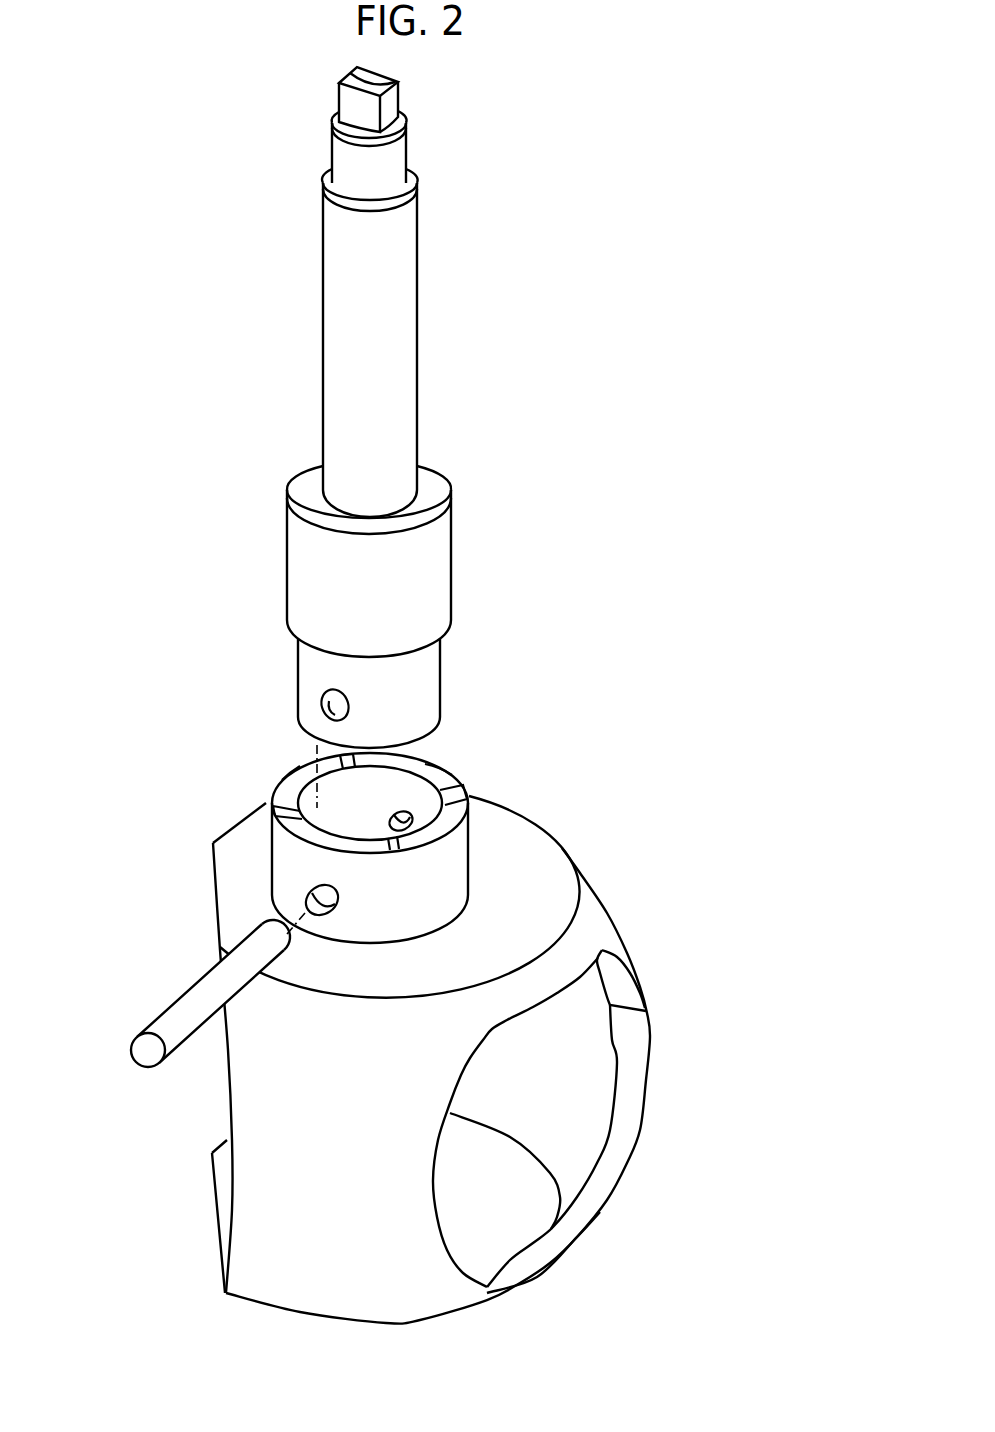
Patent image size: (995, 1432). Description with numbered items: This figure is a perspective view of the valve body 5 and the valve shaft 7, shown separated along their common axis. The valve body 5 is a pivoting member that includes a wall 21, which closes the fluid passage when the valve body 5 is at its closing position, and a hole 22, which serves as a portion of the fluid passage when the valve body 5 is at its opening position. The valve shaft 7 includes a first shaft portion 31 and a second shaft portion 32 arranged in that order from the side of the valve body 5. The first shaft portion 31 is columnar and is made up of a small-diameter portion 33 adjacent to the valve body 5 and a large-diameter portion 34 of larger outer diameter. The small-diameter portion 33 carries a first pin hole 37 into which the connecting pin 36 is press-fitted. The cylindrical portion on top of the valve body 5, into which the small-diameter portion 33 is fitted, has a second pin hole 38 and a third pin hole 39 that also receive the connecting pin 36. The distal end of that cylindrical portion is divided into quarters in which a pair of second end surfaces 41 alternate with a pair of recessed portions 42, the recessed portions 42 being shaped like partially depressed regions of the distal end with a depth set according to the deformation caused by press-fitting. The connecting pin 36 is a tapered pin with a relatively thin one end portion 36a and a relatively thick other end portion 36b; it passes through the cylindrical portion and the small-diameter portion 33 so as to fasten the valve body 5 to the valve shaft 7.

The valve shaft 7 is at (400, 407).
The second shaft portion 32 is at (418, 383).
The first shaft portion 31 is at (442, 607).
The large-diameter portion 34 is at (430, 562).
The small-diameter portion 33 is at (424, 693).
The first pin hole 37 is at (322, 713).
The second end surfaces 41 is at (287, 787).
The recessed portions 42 is at (425, 772).
The third pin hole 39 is at (400, 829).
The second pin hole 38 is at (318, 900).
The connecting pin 36 is at (165, 993).
The one end portion 36a is at (263, 932).
The other end portion 36b is at (150, 1016).
The valve body 5 is at (411, 1019).
The wall 21 is at (562, 1063).
The hole 22 is at (600, 1180).